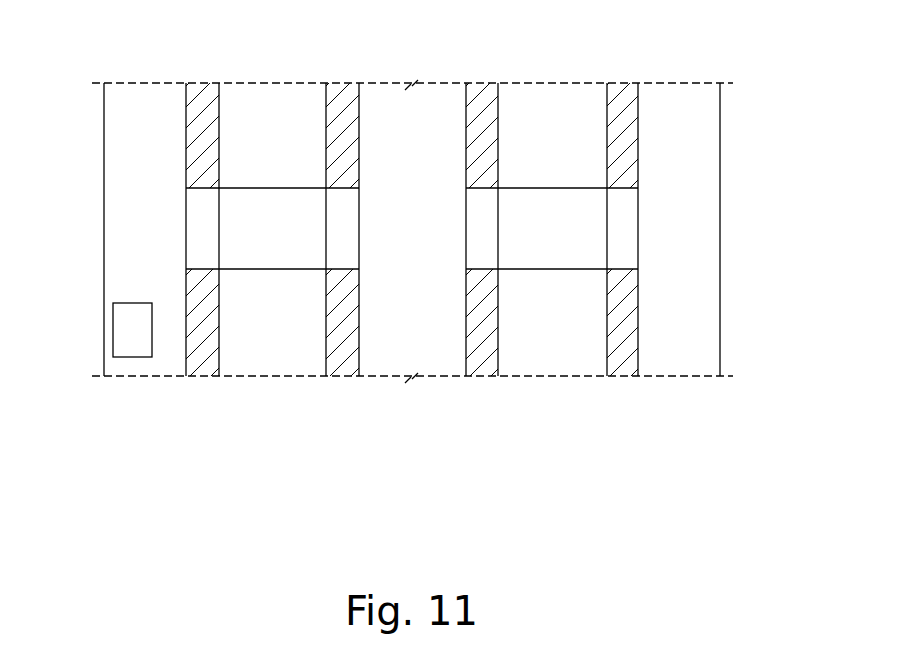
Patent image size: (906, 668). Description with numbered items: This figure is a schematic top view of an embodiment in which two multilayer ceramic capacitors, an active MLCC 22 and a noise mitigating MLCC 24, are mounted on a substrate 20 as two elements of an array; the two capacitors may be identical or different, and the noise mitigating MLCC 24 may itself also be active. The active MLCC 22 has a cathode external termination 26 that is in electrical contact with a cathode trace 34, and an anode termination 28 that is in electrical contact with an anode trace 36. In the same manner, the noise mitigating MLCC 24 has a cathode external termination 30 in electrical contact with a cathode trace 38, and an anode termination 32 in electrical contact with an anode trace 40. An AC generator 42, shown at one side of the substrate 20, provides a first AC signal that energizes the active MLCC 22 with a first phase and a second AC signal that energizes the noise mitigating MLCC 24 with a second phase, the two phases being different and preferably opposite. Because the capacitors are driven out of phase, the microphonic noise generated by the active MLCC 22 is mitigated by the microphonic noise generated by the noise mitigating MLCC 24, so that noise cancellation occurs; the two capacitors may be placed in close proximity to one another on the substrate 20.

The substrate 20 is at (733, 188).
The active MLCC 22 is at (272, 228).
The noise mitigating MLCC 24 is at (552, 228).
The cathode external termination 26 is at (203, 248).
The anode termination 28 is at (343, 255).
The cathode external termination 30 is at (483, 203).
The anode termination 32 is at (627, 248).
The cathode trace 34 is at (205, 103).
The anode trace 36 is at (343, 100).
The cathode trace 38 is at (480, 93).
The anode trace 40 is at (627, 97).
The AC generator 42 is at (133, 333).